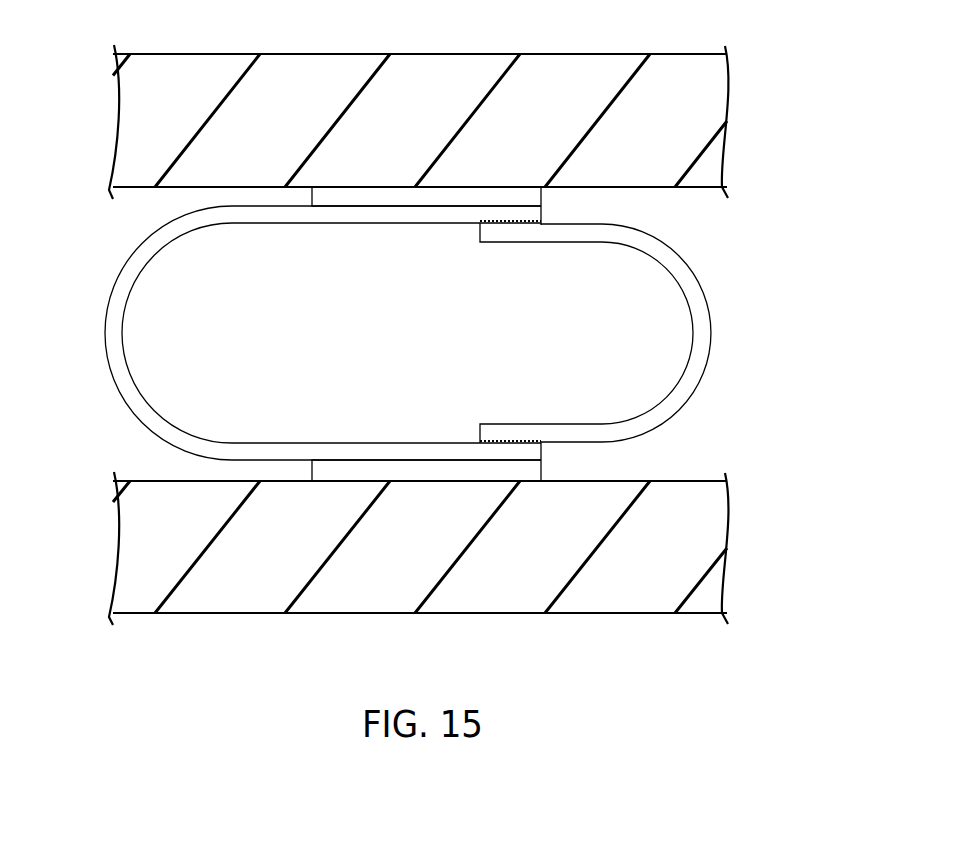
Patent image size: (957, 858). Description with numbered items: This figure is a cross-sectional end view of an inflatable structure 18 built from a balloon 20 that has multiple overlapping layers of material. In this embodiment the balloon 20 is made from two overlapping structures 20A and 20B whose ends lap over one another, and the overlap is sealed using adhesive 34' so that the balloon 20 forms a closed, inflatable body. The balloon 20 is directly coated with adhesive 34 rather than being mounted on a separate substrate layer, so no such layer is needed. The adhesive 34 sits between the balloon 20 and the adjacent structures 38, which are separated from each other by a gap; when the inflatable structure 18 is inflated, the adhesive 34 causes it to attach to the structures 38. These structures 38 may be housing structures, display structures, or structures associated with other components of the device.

The inflatable structure 18 is at (740, 274).
The balloon 20 is at (412, 333).
The overlapping structure 20A is at (113, 325).
The overlapping structure 20B is at (703, 325).
The adhesive 34 is at (461, 334).
The adhesive 34' is at (490, 331).
The structures 38 is at (534, 75).